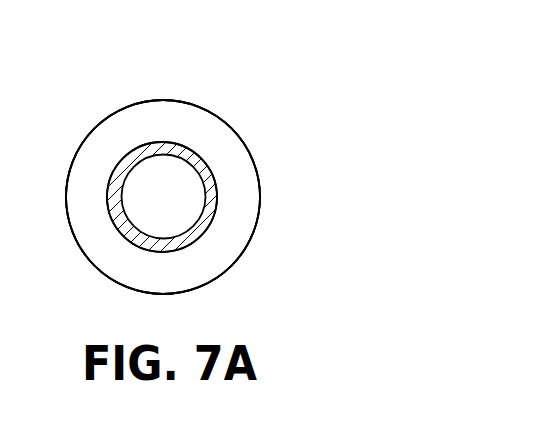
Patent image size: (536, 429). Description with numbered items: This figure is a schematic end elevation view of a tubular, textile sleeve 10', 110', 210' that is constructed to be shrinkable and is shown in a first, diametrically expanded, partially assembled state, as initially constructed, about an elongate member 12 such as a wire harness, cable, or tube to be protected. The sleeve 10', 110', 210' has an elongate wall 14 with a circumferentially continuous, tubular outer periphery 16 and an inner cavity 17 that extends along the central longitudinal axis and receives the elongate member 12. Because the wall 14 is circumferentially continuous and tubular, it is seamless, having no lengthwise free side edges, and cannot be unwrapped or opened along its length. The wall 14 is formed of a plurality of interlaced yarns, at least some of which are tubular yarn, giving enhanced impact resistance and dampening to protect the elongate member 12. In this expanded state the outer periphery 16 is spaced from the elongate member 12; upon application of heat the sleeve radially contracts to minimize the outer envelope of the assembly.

The tubular textile sleeve 10' is at (270, 209).
The tubular textile sleeve 110' is at (270, 209).
The tubular textile sleeve 210' is at (270, 209).
The elongate member 12 is at (192, 149).
The elongate wall 14 is at (108, 118).
The tubular outer periphery 16 is at (262, 198).
The inner cavity 17 is at (227, 167).